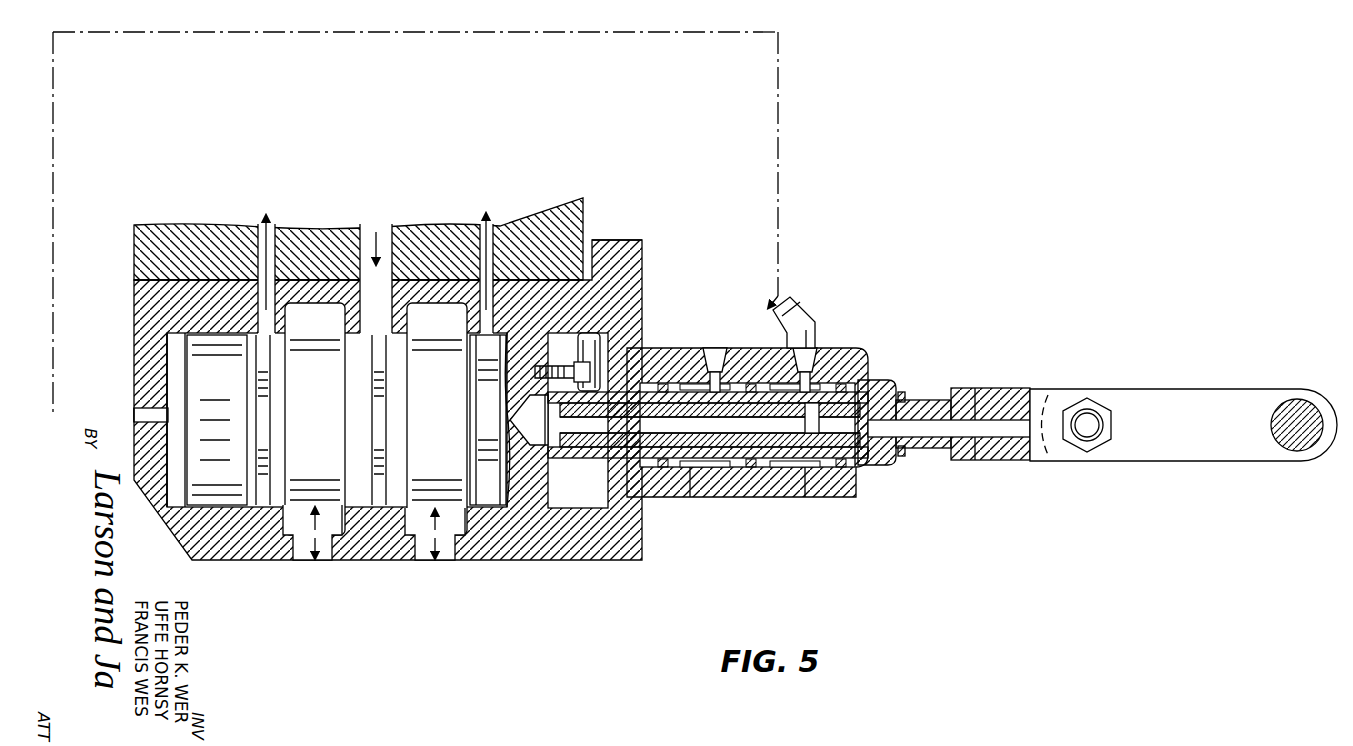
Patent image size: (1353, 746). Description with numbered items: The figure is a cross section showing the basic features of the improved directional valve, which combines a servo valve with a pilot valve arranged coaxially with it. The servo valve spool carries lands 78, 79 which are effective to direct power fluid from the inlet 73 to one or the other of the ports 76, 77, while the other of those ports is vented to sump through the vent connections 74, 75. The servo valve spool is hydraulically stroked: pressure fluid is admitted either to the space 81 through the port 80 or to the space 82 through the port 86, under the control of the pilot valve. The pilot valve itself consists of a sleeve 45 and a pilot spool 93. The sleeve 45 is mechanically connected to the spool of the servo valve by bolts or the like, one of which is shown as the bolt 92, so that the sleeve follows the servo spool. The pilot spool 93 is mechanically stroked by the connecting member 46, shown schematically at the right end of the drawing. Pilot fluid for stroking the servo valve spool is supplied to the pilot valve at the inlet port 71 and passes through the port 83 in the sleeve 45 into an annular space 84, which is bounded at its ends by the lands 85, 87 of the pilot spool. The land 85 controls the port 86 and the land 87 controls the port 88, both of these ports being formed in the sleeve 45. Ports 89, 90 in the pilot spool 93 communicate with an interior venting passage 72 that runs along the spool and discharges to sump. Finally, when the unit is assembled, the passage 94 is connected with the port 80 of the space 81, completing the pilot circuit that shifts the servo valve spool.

The sleeve 45 is at (898, 392).
The connecting member 46 is at (1222, 388).
The inlet port 71 is at (712, 345).
The interior venting passage 72 is at (936, 435).
The inlet 73 is at (383, 224).
The vent connection 74 is at (490, 222).
The vent connection 75 is at (266, 218).
The port 76 is at (312, 562).
The port 77 is at (433, 562).
The land 78 is at (326, 429).
The land 79 is at (451, 429).
The port 80 is at (150, 415).
The space 81 is at (175, 362).
The space 82 is at (622, 328).
The port 83 is at (722, 388).
The annular space 84 is at (672, 390).
The land 85 is at (553, 435).
The port 86 is at (630, 350).
The land 87 is at (868, 370).
The port 88 is at (820, 410).
The port 89 is at (685, 445).
The port 90 is at (820, 428).
The bolt 92 is at (570, 330).
The pilot spool 93 is at (925, 398).
The passage 94 is at (778, 300).